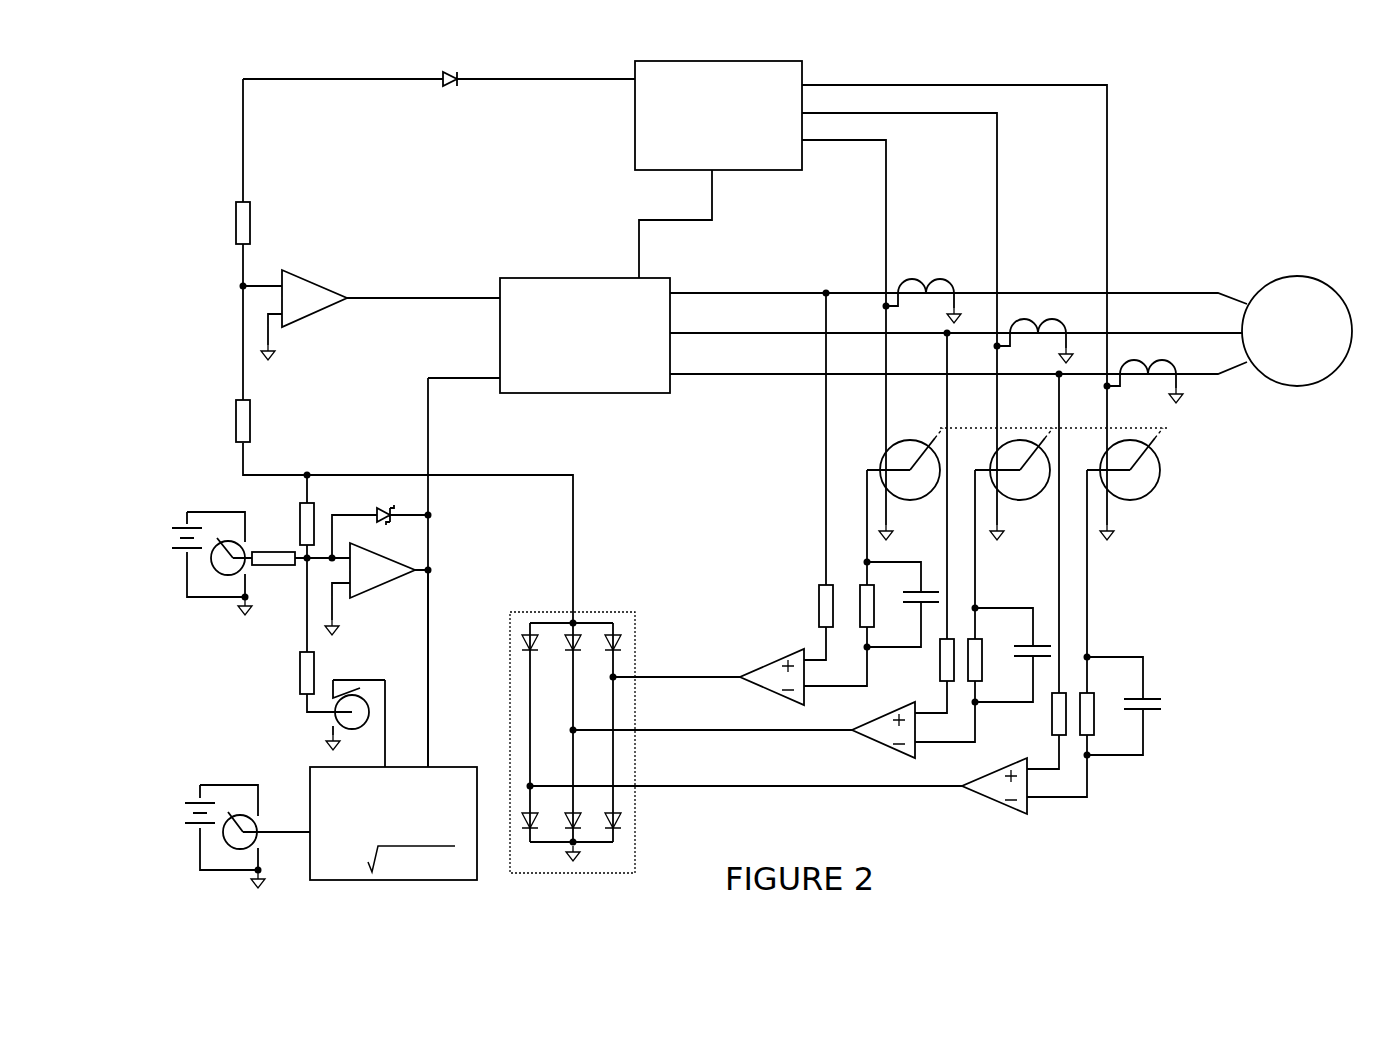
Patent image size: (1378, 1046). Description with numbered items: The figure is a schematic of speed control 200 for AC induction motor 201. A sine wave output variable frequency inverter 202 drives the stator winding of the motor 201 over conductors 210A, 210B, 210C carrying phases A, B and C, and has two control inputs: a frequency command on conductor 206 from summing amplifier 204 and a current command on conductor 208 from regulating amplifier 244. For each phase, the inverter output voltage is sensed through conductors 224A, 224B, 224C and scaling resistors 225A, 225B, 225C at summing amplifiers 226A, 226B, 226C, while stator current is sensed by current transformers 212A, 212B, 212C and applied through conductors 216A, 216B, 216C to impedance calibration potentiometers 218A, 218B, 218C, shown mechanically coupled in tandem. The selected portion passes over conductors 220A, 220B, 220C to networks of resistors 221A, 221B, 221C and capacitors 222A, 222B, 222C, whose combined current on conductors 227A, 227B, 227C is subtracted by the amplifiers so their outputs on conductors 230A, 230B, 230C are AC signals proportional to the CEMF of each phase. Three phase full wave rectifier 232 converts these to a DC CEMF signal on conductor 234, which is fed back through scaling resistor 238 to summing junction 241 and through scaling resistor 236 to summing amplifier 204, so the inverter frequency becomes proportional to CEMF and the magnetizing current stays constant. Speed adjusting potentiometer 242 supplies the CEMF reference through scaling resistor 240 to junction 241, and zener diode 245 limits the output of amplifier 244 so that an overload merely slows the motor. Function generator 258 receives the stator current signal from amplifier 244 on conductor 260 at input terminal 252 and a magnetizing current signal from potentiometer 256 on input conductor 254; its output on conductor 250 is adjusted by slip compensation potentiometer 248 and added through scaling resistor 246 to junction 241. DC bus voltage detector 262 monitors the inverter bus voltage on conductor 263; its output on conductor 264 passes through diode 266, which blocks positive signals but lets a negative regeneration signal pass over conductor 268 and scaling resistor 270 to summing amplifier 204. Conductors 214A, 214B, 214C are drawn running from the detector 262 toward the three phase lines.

The speed control 200 is at (1245, 117).
The AC induction motor 201 is at (1282, 281).
The sine wave output variable frequency inverter 202 is at (552, 278).
The summing amplifier 204 is at (300, 276).
The conductor 206 is at (412, 300).
The conductor 208 is at (428, 392).
The conductor 210A is at (858, 278).
The conductor 210B is at (846, 322).
The conductor 210C is at (848, 362).
The current transformer 212A is at (910, 290).
The current transformer 212B is at (1022, 330).
The current transformer 212C is at (1140, 372).
The phase A detector line 214A is at (844, 212).
The phase B detector line 214B is at (899, 219).
The phase C detector line 214C is at (954, 225).
The conductor 216A is at (888, 408).
The conductor 216B is at (999, 418).
The conductor 216C is at (1109, 428).
The impedance calibration potentiometer 218A is at (894, 498).
The impedance calibration potentiometer 218B is at (1004, 498).
The impedance calibration potentiometer 218C is at (1116, 498).
The conductor 220A is at (872, 490).
The conductor 220B is at (980, 490).
The conductor 220C is at (1092, 490).
The resistor 221A is at (874, 618).
The resistor 221B is at (982, 668).
The resistor 221C is at (1094, 724).
The capacitor 222A is at (902, 600).
The capacitor 222B is at (1012, 648).
The capacitor 222C is at (1124, 704).
The conductor 224A is at (826, 556).
The conductor 224B is at (947, 566).
The conductor 224C is at (1059, 618).
The scaling resistor 225A is at (818, 608).
The scaling resistor 225B is at (940, 676).
The scaling resistor 225C is at (1052, 733).
The summing amplifier 226A is at (786, 660).
The summing amplifier 226B is at (884, 718).
The summing amplifier 226C is at (998, 774).
The conductor 227A is at (860, 658).
The conductor 227B is at (970, 712).
The conductor 227C is at (1084, 764).
The conductor 230A is at (646, 676).
The conductor 230B is at (646, 730).
The conductor 230C is at (646, 786).
The three phase full wave rectifier 232 is at (558, 612).
The conductor 234 is at (458, 475).
The scaling resistor 236 is at (252, 410).
The scaling resistor 238 is at (316, 506).
The scaling resistor 240 is at (262, 550).
The summing junction 241 is at (306, 563).
The speed adjusting potentiometer 242 is at (222, 578).
The regulating amplifier 244 is at (380, 586).
The zener diode 245 is at (380, 530).
The scaling resistor 246 is at (300, 676).
The slip compensation potentiometer 248 is at (370, 716).
The conductor 250 is at (405, 723).
The input terminal 252 is at (450, 753).
The input conductor 254 is at (276, 818).
The potentiometer 256 is at (236, 858).
The function generator 258 is at (368, 880).
The conductor 260 is at (428, 678).
The DC bus voltage detector 262 is at (688, 64).
The conductor 263 is at (639, 226).
The conductor 264 is at (537, 78).
The diode 266 is at (452, 66).
The conductor 268 is at (332, 78).
The scaling resistor 270 is at (252, 212).